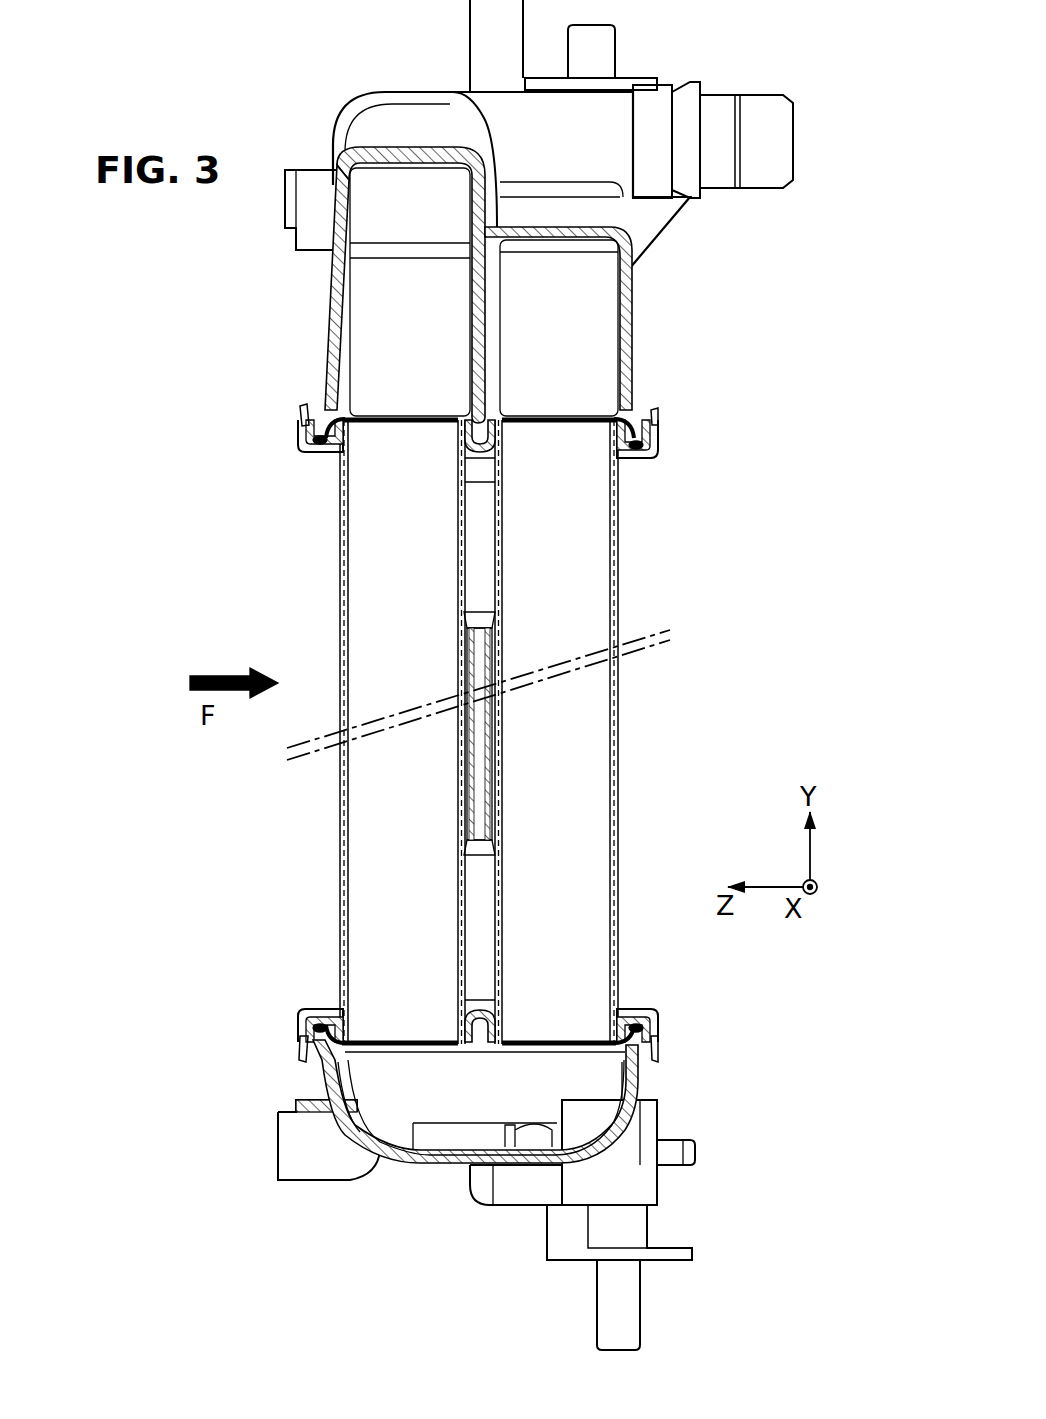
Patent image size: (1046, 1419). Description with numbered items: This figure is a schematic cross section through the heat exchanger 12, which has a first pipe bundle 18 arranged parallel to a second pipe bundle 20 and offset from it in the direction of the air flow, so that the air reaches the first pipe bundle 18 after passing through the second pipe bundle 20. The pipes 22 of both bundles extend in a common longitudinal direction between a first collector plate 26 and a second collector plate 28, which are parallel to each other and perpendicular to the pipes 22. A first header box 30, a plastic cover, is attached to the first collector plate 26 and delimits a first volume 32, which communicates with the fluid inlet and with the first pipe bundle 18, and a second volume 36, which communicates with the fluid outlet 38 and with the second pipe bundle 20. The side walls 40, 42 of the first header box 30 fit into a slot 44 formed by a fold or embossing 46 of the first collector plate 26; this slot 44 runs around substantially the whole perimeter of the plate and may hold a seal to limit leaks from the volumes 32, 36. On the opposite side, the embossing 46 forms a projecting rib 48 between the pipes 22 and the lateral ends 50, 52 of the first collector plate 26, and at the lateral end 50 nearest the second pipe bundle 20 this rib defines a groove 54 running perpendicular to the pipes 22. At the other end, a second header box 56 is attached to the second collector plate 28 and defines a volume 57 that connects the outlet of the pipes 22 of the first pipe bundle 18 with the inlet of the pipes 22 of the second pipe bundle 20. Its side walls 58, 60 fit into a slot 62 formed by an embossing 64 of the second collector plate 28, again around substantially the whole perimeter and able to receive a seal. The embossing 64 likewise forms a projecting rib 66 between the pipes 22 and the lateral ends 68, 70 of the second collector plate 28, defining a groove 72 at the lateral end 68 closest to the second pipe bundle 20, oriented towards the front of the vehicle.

The heat exchanger 12 is at (322, 94).
The first pipe bundle 18 is at (624, 545).
The second pipe bundle 20 is at (338, 597).
The pipes 22 is at (342, 808).
The first collector plate 26 is at (500, 450).
The second collector plate 28 is at (505, 1032).
The first header box 30 is at (402, 162).
The first volume 32 is at (565, 357).
The second volume 36 is at (430, 357).
The fluid outlet 38 is at (760, 110).
The side wall of the first header box 40 is at (334, 292).
The side wall of the first header box 42 is at (633, 330).
The slot of the first collector plate 44 is at (318, 446).
The embossing 46 is at (300, 461).
The projecting rib 48 is at (322, 458).
The lateral end of the first collector plate 50 is at (296, 437).
The lateral end of the first collector plate 52 is at (666, 438).
The groove 54 is at (336, 460).
The second header box 56 is at (428, 1160).
The volume 57 is at (495, 1100).
The side wall of the second header box 58 is at (324, 1094).
The side wall of the second header box 60 is at (640, 1066).
The slot in the second collector plate 62 is at (312, 1036).
The embossing 64 is at (300, 1006).
The projecting rib 66 is at (325, 1020).
The lateral end of the second collector plate 68 is at (299, 1024).
The lateral end of the second collector plate 70 is at (662, 1027).
The groove 72 is at (335, 1012).